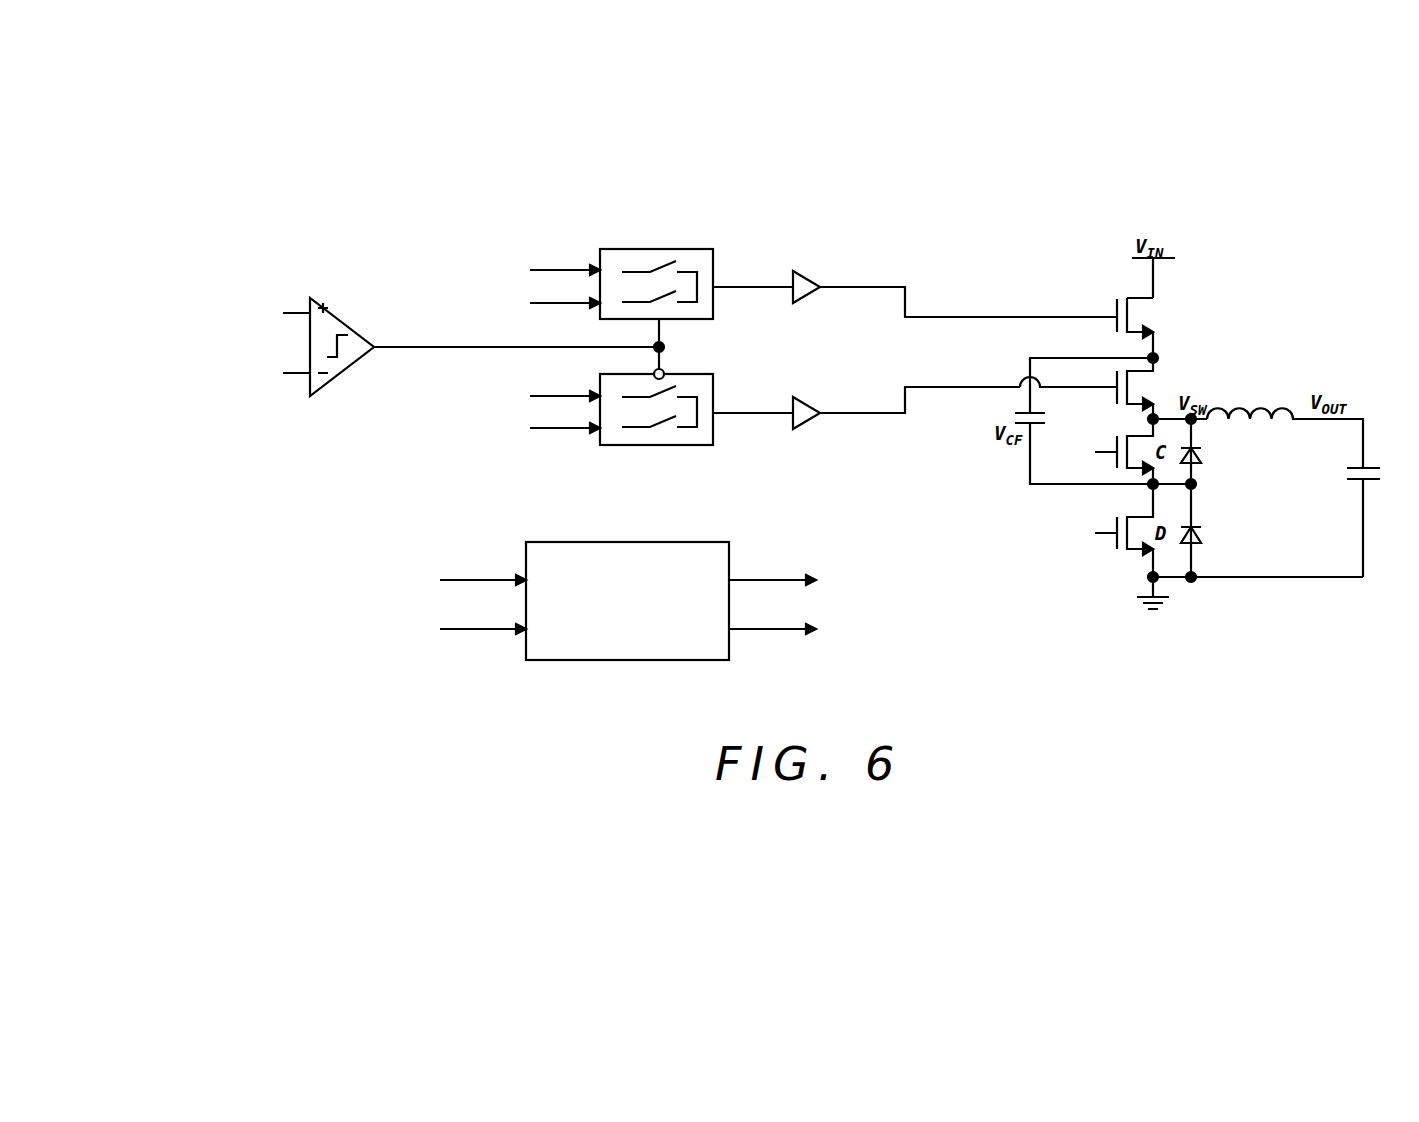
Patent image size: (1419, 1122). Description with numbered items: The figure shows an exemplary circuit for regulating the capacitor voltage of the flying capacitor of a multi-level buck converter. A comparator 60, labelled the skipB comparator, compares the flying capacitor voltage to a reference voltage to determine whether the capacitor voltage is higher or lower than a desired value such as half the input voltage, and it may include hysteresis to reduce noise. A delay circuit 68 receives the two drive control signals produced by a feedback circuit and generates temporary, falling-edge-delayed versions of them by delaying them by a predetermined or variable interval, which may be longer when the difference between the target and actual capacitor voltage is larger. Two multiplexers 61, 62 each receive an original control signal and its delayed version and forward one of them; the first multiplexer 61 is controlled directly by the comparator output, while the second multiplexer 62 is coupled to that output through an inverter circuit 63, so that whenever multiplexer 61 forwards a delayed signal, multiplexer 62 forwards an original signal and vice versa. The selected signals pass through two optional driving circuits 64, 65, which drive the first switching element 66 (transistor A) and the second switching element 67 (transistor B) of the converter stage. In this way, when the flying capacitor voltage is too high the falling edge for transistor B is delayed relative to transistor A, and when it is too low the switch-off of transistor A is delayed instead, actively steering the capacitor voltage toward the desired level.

The comparator 60 is at (336, 320).
The first multiplexer 61 is at (660, 249).
The second multiplexer 62 is at (660, 445).
The inverter circuit 63 is at (664, 370).
The driving circuit 64 is at (808, 280).
The driving circuit 65 is at (808, 406).
The first switching element 66 is at (1172, 311).
The second switching element 67 is at (1172, 380).
The delay circuit 68 is at (665, 660).